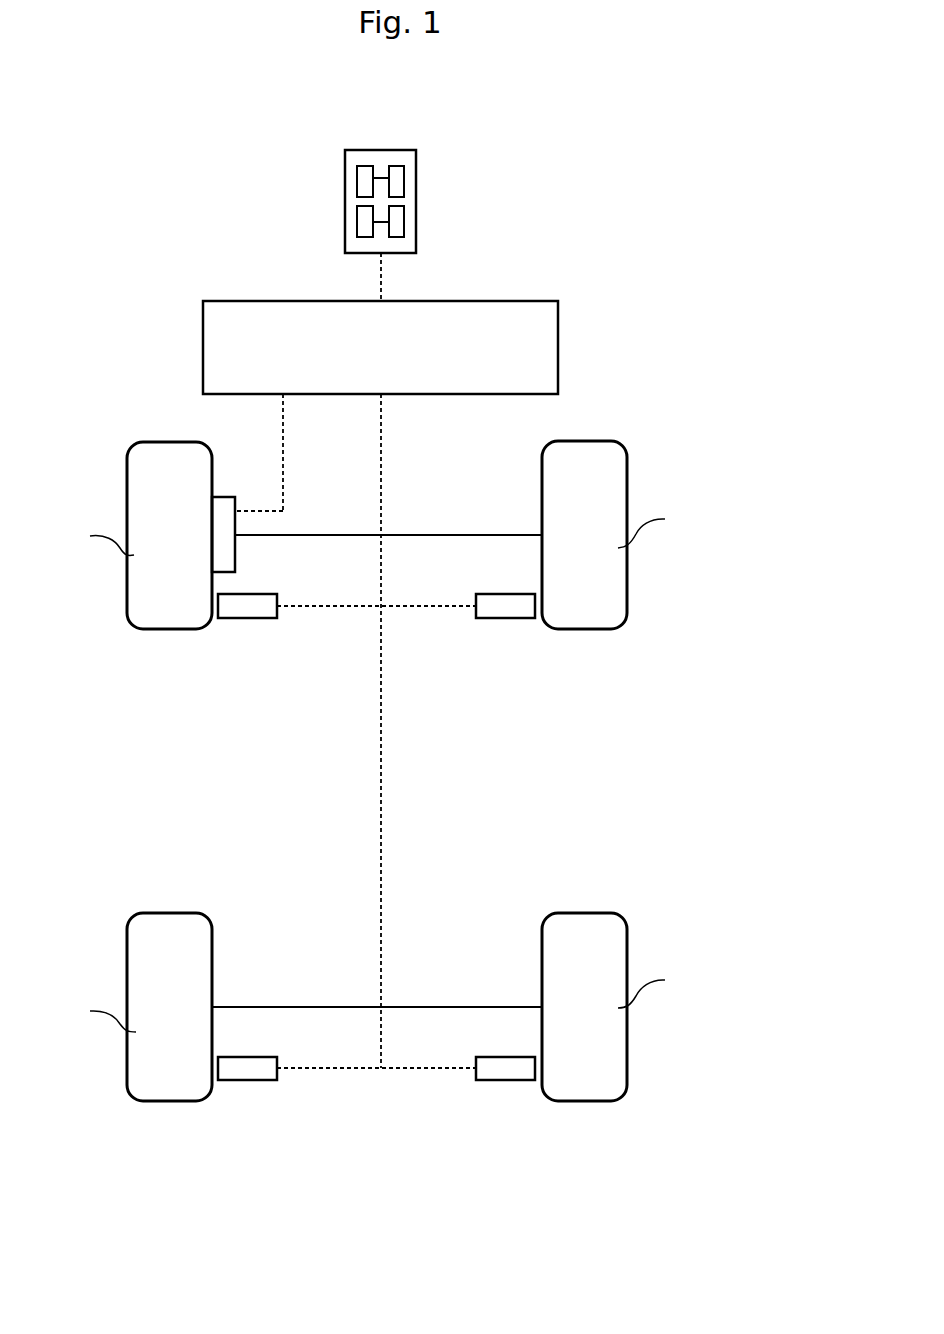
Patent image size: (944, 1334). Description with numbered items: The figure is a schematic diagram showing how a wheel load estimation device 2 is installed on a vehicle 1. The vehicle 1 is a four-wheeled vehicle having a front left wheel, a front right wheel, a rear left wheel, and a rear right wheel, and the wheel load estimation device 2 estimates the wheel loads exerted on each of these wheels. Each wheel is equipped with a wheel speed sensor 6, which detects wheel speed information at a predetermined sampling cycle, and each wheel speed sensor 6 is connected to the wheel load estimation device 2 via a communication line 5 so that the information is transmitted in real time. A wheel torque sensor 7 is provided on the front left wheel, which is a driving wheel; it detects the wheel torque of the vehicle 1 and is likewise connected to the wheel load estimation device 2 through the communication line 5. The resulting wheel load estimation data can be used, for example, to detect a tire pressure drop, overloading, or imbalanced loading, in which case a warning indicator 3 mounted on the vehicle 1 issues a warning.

The vehicle 1 is at (683, 446).
The wheel load estimation device 2 is at (543, 335).
The warning indicator 3 is at (381, 160).
The communication line 5 is at (386, 806).
The wheel speed sensor 6 is at (245, 608).
The wheel torque sensor 7 is at (222, 510).